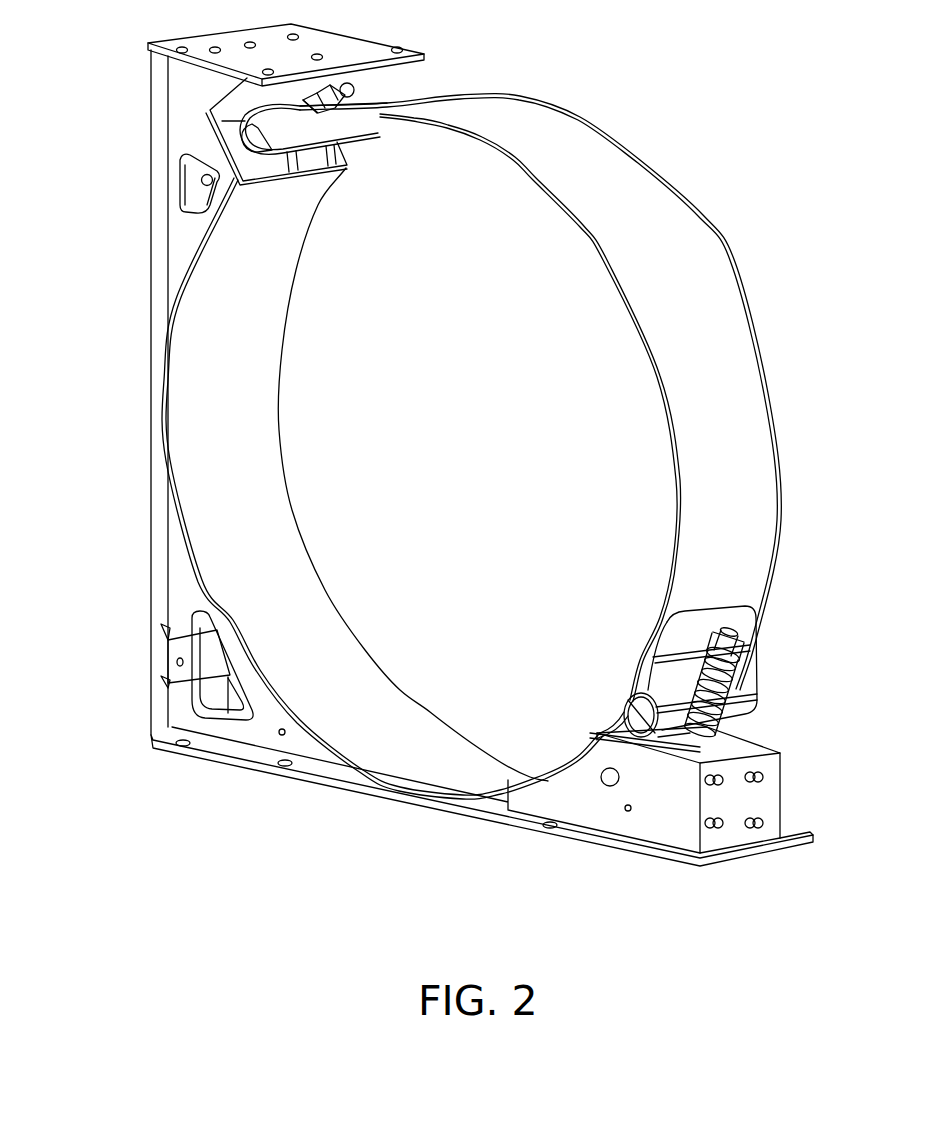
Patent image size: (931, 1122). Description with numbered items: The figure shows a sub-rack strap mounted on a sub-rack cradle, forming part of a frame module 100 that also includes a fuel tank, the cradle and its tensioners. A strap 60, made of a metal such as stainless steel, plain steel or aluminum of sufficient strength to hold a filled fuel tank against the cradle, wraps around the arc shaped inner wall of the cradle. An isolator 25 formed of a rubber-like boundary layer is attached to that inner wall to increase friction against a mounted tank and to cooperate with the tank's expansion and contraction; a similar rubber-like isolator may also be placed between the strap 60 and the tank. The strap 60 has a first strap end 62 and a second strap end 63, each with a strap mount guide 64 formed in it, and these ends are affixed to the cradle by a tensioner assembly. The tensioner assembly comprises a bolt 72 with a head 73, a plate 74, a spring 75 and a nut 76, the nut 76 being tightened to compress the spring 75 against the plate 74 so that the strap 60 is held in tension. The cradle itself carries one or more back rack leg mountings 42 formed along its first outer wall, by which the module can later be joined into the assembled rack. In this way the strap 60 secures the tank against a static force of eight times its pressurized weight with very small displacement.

The frame module 100 is at (137, 243).
The strap 60 is at (680, 297).
The isolator 25 is at (293, 477).
The plate 74 is at (222, 121).
The second strap end 63 is at (378, 97).
The back rack leg mounting 42 is at (178, 667).
The first strap end 62 is at (663, 640).
The strap mount guide 64 is at (683, 697).
The bolt 72 is at (757, 633).
The nut 76 is at (753, 677).
The spring 75 is at (757, 710).
The head 73 is at (678, 805).